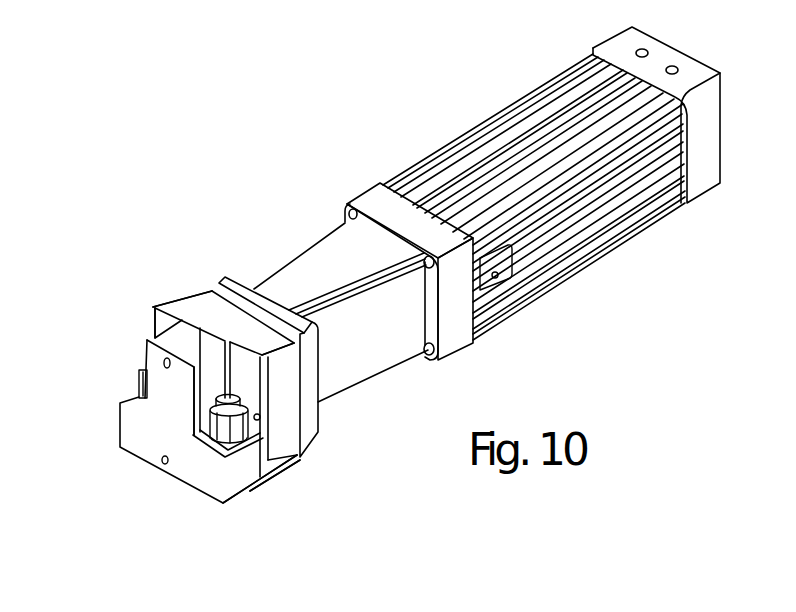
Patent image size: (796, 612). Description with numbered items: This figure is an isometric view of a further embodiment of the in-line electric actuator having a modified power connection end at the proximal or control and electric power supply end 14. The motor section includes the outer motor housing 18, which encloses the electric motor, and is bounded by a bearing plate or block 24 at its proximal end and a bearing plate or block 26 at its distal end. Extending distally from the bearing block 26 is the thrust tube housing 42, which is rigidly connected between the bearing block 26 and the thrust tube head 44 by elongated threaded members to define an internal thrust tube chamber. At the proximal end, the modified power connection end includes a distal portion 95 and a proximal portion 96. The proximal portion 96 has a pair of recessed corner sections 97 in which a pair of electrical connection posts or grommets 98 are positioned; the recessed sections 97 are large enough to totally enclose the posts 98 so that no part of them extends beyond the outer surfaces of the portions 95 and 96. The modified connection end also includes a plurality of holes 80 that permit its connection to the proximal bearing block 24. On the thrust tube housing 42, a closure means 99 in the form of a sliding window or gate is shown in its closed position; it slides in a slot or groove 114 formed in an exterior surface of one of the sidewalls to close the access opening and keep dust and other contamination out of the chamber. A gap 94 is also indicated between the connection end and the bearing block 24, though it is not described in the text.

The proximal or control and electric power supply end 14 is at (507, 224).
The outer motor housing 18 is at (335, 247).
The bearing plate or block 24 is at (262, 300).
The bearing plate or block 26 is at (386, 208).
The thrust tube housing 42 is at (557, 104).
The thrust tube head 44 is at (715, 127).
The holes 80 is at (165, 465).
The gap 94 is at (283, 466).
The distal portion 95 is at (293, 418).
The proximal portion 96 is at (200, 478).
The recessed corner sections 97 is at (206, 374).
The electrical connection posts or grommets 98 is at (140, 370).
The closure means 99 is at (484, 284).
The slot or groove 114 is at (597, 209).